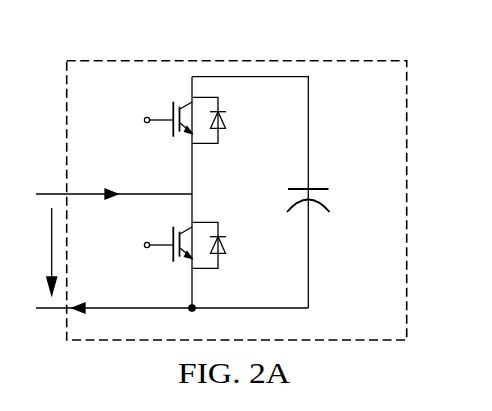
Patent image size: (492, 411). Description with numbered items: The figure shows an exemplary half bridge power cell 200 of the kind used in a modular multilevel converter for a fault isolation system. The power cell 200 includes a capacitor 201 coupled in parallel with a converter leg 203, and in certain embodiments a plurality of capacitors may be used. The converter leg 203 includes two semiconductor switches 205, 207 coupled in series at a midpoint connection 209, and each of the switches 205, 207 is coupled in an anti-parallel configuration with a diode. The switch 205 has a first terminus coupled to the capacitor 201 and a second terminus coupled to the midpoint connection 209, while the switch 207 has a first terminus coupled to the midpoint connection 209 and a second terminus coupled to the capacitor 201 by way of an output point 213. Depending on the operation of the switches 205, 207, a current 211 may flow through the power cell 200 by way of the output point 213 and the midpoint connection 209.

The half bridge power cell 200 is at (345, 60).
The capacitor 201 is at (308, 99).
The converter leg 203 is at (192, 77).
The semiconductor switch 205 is at (173, 102).
The semiconductor switch 207 is at (173, 227).
The midpoint connection 209 is at (192, 194).
The current 211 is at (112, 193).
The output point 213 is at (192, 307).